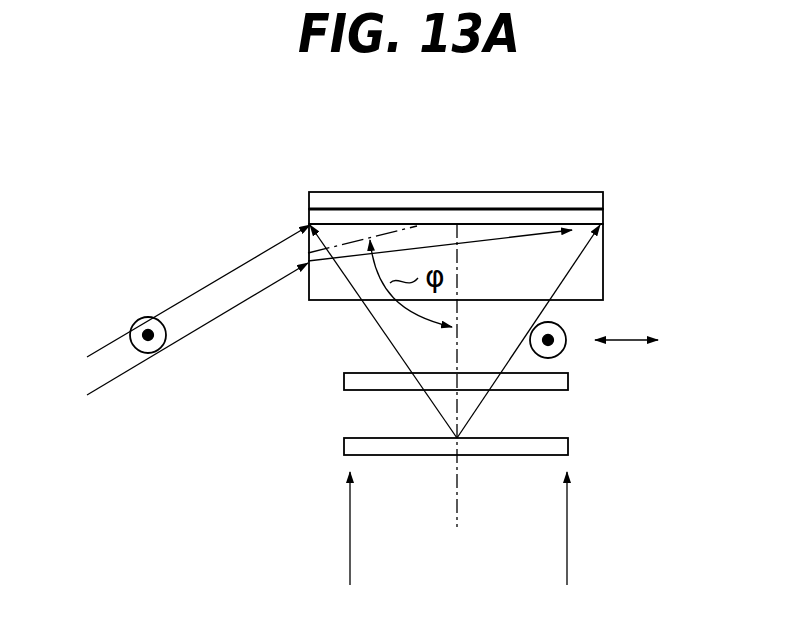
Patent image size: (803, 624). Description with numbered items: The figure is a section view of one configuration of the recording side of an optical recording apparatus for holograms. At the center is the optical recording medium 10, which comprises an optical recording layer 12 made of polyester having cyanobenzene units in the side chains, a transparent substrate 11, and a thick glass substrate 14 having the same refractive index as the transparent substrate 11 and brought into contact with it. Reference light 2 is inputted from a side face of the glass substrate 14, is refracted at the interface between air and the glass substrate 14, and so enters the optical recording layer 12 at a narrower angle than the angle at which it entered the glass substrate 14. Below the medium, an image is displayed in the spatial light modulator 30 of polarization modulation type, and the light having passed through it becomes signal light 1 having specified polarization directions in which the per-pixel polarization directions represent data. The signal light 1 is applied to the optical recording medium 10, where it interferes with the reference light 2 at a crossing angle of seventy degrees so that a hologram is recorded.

The optical recording medium 10 is at (503, 209).
The optical recording layer 12 is at (600, 195).
The transparent substrate 11 is at (600, 214).
The glass substrate 14 is at (600, 282).
The reference light 2 is at (185, 297).
The spatial light modulator 30 is at (570, 385).
The signal light 1 is at (567, 553).